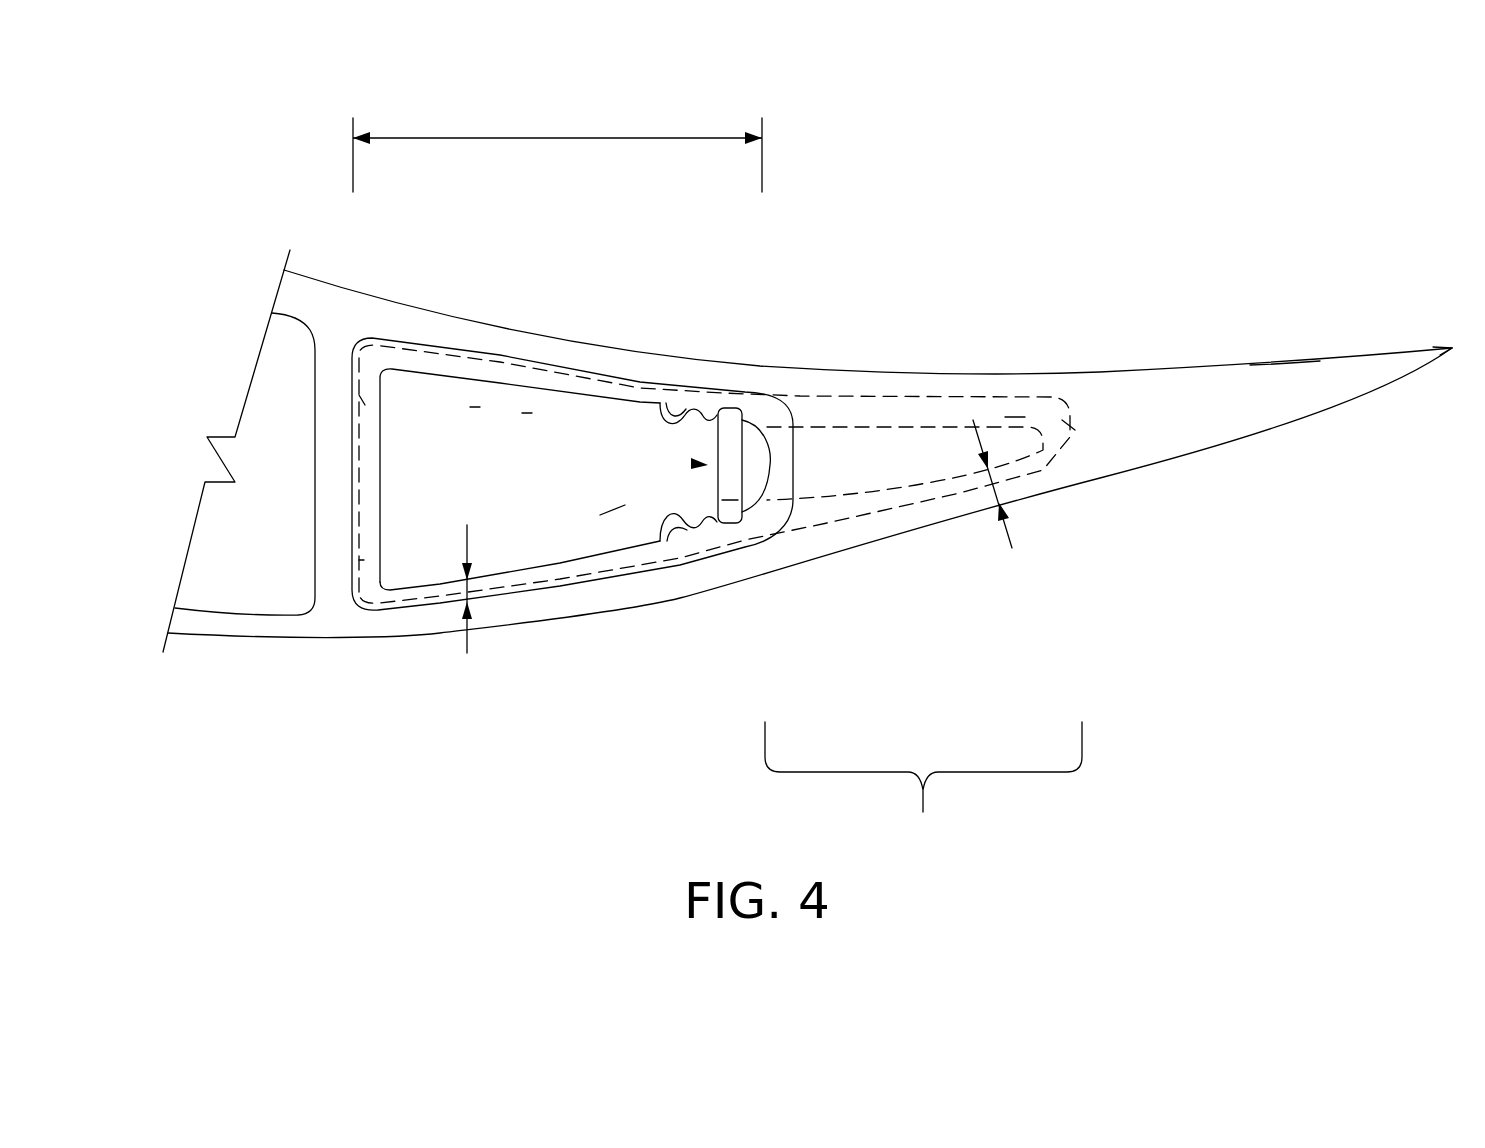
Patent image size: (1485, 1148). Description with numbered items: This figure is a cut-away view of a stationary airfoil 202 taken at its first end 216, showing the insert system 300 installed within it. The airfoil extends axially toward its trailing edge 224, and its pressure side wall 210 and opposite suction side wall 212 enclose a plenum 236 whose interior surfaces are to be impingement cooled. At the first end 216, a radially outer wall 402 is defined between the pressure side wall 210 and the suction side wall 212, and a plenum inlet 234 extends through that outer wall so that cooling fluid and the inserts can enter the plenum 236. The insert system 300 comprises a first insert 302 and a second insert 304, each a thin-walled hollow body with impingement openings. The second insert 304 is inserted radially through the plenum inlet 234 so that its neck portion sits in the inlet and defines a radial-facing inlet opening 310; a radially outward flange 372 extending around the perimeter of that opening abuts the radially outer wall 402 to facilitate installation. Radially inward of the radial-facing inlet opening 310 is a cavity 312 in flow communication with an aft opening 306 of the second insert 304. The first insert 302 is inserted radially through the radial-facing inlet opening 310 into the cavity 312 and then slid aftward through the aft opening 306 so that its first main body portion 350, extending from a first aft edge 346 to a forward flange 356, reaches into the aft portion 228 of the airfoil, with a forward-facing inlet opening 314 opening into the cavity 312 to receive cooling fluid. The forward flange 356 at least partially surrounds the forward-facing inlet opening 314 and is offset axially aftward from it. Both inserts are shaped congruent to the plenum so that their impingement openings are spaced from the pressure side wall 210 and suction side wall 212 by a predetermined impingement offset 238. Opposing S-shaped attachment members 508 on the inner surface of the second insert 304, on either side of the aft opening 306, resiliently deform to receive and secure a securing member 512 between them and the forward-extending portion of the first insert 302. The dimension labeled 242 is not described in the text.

The stationary airfoil 202 is at (818, 414).
The pressure side wall 210 is at (1213, 367).
The suction side wall 212 is at (1217, 445).
The first end 216 is at (185, 392).
The trailing edge 224 is at (1452, 348).
The aft portion 228 is at (923, 783).
The plenum inlet 234 is at (528, 400).
The plenum 236 is at (360, 393).
The impingement offset 238 is at (470, 587).
The frame length 242 is at (642, 138).
The insert system 300 is at (692, 474).
The first insert 302 is at (887, 425).
The second insert 304 is at (393, 612).
The aft opening 306 is at (630, 344).
The radial-facing inlet opening 310 is at (475, 395).
The cavity 312 is at (606, 524).
The forward-facing inlet opening 314 is at (693, 464).
The first aft edge 346 is at (1072, 427).
The first main body portion 350 is at (1013, 417).
The forward flange 356 is at (752, 453).
The radially outward flange 372 is at (363, 557).
The radially outer wall 402 is at (1270, 390).
The attachment members 508 is at (673, 410).
The securing member 512 is at (727, 498).